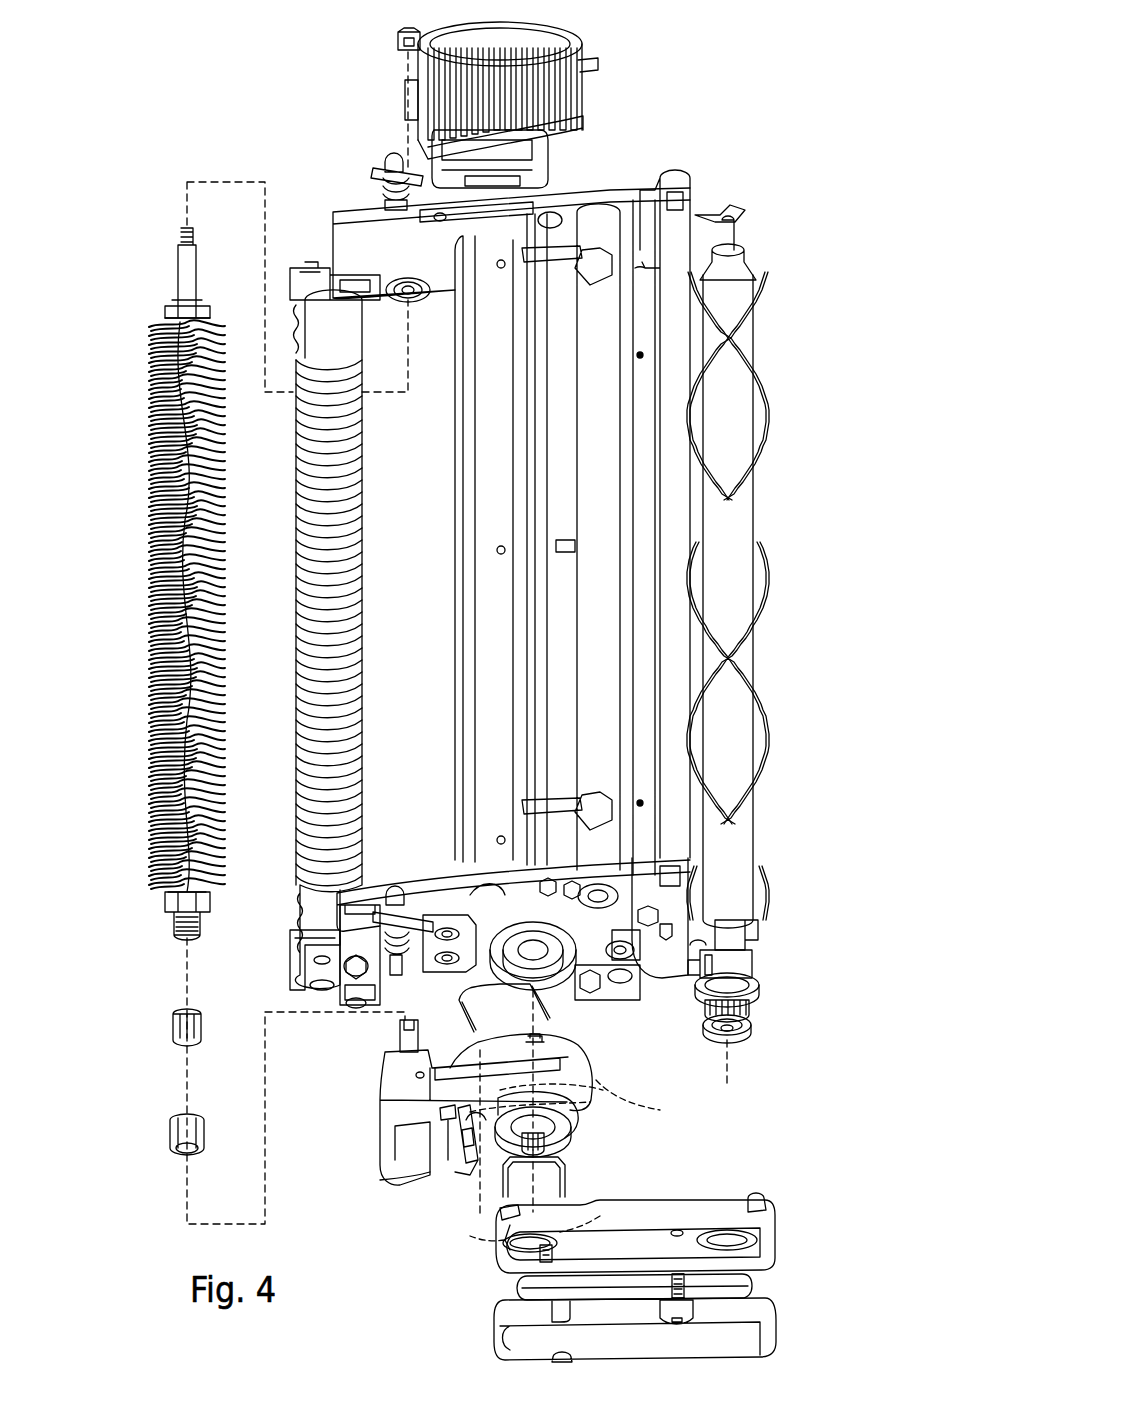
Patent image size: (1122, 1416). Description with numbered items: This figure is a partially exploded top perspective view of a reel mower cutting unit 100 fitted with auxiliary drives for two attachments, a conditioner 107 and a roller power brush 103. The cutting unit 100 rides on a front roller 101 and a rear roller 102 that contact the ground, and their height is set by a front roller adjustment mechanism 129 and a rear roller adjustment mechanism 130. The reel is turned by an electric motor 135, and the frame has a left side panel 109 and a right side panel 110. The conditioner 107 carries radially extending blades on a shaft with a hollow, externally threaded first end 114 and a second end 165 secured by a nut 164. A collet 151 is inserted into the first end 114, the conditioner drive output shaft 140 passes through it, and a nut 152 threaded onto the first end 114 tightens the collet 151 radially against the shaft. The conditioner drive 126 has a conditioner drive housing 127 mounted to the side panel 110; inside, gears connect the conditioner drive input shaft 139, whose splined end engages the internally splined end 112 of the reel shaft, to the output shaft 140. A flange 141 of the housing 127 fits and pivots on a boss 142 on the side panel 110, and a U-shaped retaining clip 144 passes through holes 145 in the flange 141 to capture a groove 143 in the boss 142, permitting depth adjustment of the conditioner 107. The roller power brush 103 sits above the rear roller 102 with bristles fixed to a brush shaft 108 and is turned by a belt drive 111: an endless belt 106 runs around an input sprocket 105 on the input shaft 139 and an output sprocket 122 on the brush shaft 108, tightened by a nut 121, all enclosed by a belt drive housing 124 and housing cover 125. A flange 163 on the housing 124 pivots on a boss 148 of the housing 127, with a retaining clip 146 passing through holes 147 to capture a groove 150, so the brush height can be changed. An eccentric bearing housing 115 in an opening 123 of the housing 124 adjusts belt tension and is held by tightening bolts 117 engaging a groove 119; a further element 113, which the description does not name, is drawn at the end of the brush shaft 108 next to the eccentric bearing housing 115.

The reel mower cutting unit 100 is at (219, 118).
The front roller 101 is at (382, 522).
The rear roller 102 is at (700, 520).
The roller power brush 103 is at (740, 550).
The input sprocket 105 is at (548, 1150).
The endless belt 106 is at (745, 1285).
The conditioner 107 is at (152, 438).
The brush shaft 108 is at (732, 935).
The side panel 109 is at (362, 218).
The side panel 110 is at (458, 890).
The belt drive 111 is at (818, 1246).
The internally splined end 112 is at (560, 982).
The bearing block 113 is at (742, 965).
The first end 114 is at (170, 922).
The eccentric bearing housing 115 is at (760, 1005).
The tightening bolts 117 is at (757, 1205).
The groove 119 is at (760, 985).
The nut 121 is at (738, 1032).
The output sprocket 122 is at (748, 1020).
The opening 123 is at (700, 1242).
The belt drive housing 124 is at (732, 1235).
The housing cover 125 is at (750, 1340).
The conditioner drive 126 is at (380, 1207).
The conditioner drive housing 127 is at (392, 1172).
The front roller adjustment mechanism 129 is at (305, 930).
The rear roller adjustment mechanism 130 is at (690, 182).
The electric motor 135 is at (578, 65).
The conditioner drive input shaft 139 is at (560, 1042).
The conditioner drive output shaft 140 is at (397, 1046).
The flange 141 is at (575, 1065).
The boss 142 is at (492, 852).
The groove 143 is at (475, 812).
The retaining clip 144 is at (474, 1035).
The holes 145 is at (590, 1108).
The retaining clip 146 is at (505, 1182).
The holes 147 is at (505, 1240).
The boss 148 is at (465, 1175).
The groove 150 is at (572, 1130).
The collet 151 is at (172, 1028).
The nut 152 is at (170, 1130).
The flange 163 is at (512, 1212).
The nut 164 is at (398, 46).
The second end 165 is at (180, 256).